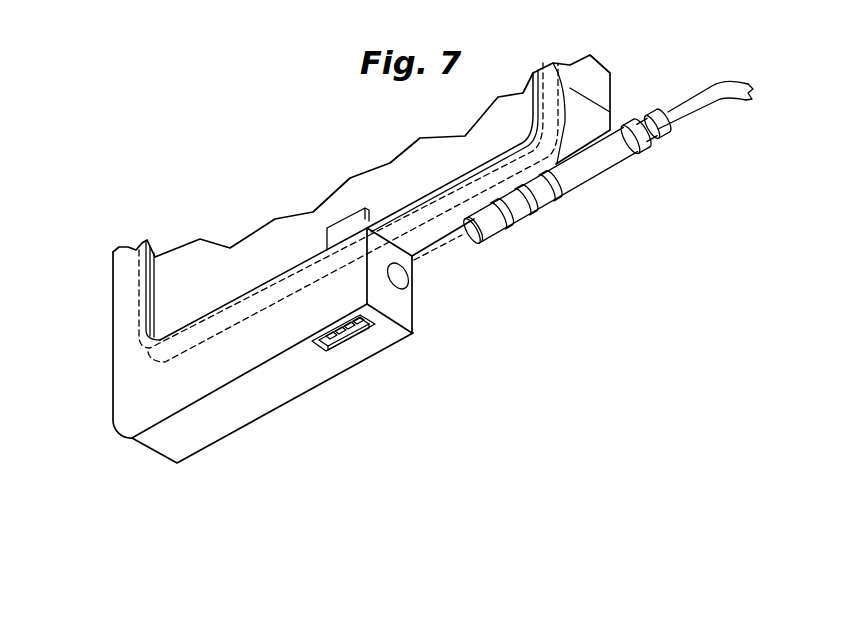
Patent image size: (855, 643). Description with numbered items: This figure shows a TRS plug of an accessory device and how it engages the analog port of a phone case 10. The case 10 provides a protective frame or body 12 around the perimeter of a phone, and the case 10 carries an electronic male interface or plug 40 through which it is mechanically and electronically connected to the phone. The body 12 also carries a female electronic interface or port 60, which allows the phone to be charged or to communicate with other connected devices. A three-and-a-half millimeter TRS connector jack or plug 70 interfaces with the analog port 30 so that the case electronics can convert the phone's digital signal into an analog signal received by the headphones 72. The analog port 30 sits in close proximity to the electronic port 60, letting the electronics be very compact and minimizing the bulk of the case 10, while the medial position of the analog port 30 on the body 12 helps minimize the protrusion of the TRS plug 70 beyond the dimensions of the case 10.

The phone case 10 is at (130, 216).
The body 12 is at (112, 353).
The analog port 30 is at (393, 272).
The plug 40 is at (350, 215).
The port 60 is at (342, 347).
The TRS plug 70 is at (540, 203).
The headphones 72 is at (700, 83).